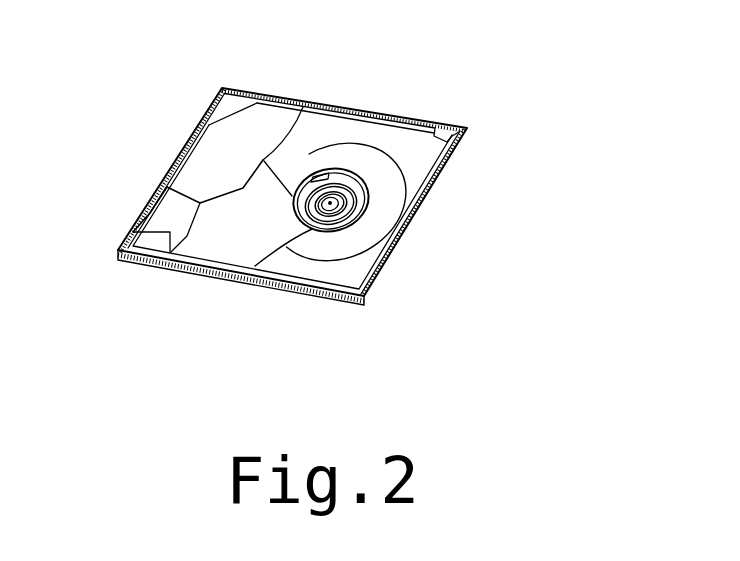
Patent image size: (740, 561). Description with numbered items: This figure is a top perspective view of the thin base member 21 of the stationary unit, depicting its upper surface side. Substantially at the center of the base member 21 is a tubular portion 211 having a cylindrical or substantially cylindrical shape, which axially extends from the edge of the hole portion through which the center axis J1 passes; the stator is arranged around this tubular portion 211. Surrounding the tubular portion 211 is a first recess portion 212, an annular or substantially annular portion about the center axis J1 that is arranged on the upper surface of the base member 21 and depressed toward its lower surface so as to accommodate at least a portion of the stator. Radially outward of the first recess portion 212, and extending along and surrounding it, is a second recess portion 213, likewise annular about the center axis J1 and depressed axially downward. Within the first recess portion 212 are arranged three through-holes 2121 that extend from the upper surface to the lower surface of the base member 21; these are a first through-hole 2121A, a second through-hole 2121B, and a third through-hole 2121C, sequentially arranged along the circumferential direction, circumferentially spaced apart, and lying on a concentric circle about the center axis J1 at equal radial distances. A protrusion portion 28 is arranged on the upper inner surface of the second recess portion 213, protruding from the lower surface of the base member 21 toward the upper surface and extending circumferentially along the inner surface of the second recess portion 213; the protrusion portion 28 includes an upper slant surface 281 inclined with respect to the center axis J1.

The base member 21 is at (98, 63).
The tubular portion 211 is at (312, 228).
The first recess portion 212 is at (337, 238).
The second recess portion 213 is at (362, 222).
The through-hole 2121 is at (489, 144).
The first through-hole 2121A is at (346, 198).
The second through-hole 2121B is at (354, 188).
The third through-hole 2121C is at (363, 176).
The protrusion portion 28 is at (339, 172).
The upper slant surface 281 is at (330, 173).
The center axis J1 is at (332, 203).